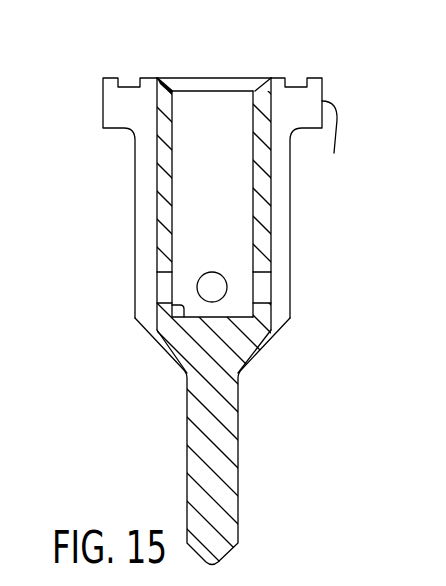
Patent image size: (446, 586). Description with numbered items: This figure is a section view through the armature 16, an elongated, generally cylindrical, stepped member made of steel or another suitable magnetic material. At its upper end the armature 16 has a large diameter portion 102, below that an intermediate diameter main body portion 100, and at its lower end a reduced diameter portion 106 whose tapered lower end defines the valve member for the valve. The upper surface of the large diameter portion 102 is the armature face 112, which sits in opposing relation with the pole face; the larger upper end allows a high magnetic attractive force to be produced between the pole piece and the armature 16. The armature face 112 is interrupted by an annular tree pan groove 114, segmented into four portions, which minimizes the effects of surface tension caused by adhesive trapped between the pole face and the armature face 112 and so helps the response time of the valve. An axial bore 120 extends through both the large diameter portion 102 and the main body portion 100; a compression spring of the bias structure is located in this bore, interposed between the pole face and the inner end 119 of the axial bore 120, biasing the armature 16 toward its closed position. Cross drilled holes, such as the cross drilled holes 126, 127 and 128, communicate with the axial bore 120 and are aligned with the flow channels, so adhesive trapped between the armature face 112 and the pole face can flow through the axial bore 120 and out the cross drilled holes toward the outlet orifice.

The armature 16 is at (352, 87).
The main body portion 100 is at (290, 232).
The large diameter portion 102 is at (332, 143).
The reduced diameter portion 106 is at (238, 477).
The armature face 112 is at (148, 77).
The tree pan groove 114 is at (296, 82).
The inner end of the axial bore 119 is at (172, 308).
The axial bore 120 is at (202, 105).
The cross drilled hole 126 is at (162, 283).
The cross drilled hole 127 is at (210, 303).
The cross drilled hole 128 is at (263, 293).